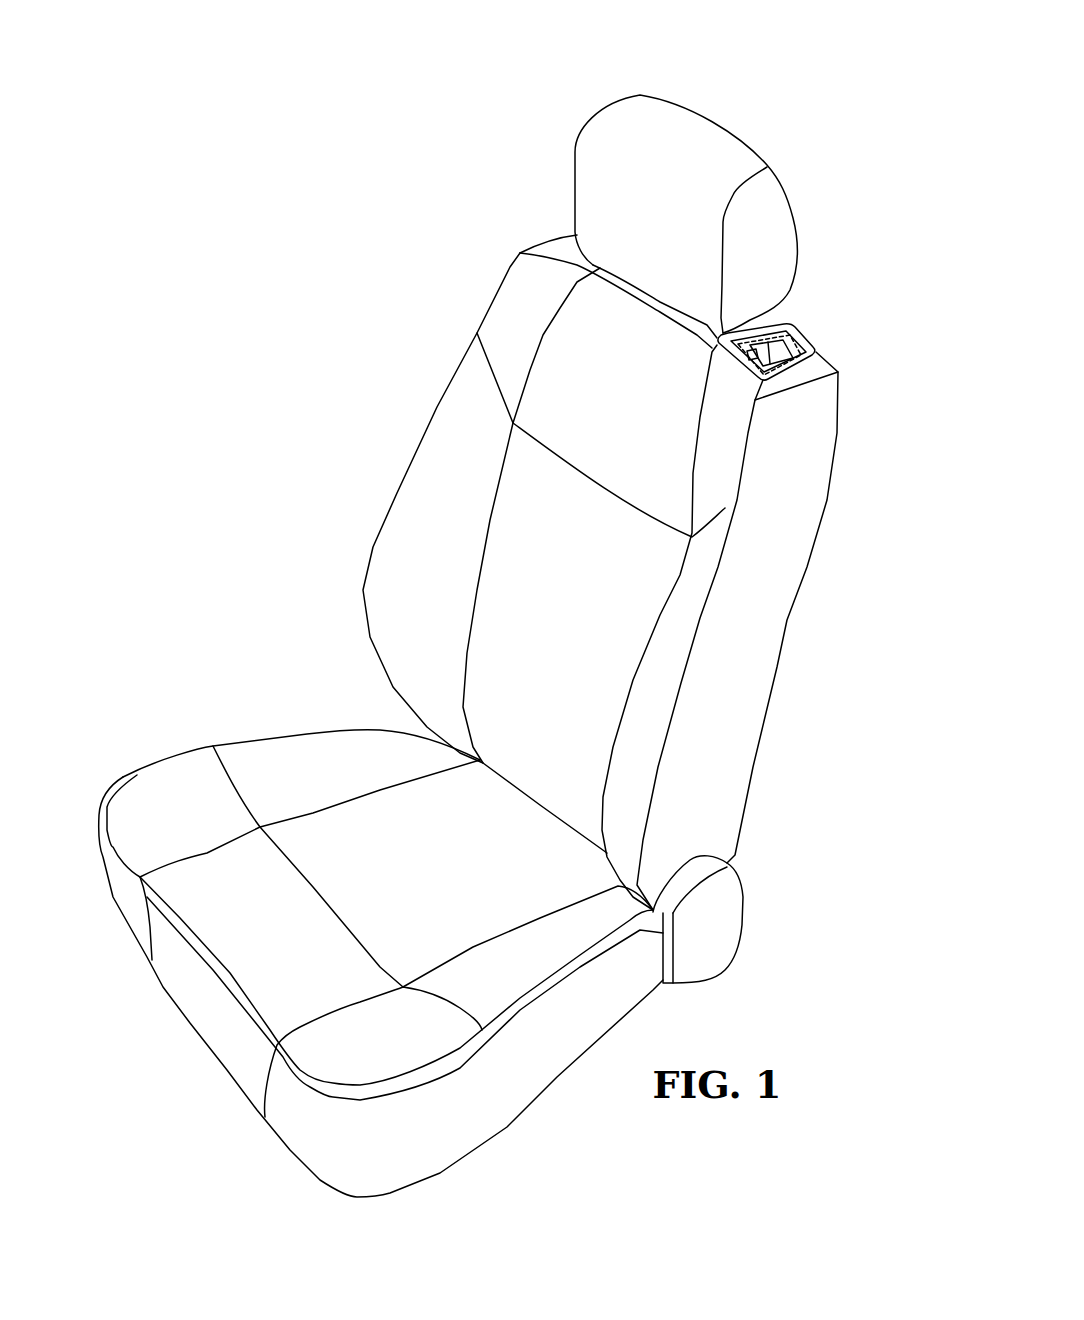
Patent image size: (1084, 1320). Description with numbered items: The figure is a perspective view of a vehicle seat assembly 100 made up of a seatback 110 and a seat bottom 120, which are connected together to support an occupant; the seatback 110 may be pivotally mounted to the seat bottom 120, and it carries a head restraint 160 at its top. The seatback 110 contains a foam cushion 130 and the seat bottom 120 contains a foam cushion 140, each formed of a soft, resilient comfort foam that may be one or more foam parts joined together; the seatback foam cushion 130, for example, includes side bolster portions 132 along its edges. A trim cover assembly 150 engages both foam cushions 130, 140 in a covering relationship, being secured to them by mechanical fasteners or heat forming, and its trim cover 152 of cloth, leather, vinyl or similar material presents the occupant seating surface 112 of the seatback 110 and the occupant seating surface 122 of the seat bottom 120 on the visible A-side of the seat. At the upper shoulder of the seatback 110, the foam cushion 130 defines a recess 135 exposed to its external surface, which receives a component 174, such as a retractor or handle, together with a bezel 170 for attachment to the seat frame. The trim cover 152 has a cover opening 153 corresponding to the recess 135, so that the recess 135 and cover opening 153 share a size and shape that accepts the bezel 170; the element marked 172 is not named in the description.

The vehicle seat assembly 100 is at (437, 123).
The seatback 110 is at (457, 373).
The occupant seating surface 112 is at (513, 423).
The seat bottom 120 is at (123, 780).
The occupant seating surface 122 is at (310, 820).
The foam cushion 130 is at (555, 563).
The side bolster portions 132 is at (420, 573).
The recess 135 is at (780, 350).
The foam cushion 140 is at (193, 987).
The trim cover assembly 150 is at (400, 1033).
The trim cover 152 is at (725, 330).
The cover opening 153 is at (797, 338).
The head restraint 160 is at (650, 183).
The bezel 170 is at (829, 296).
The bezel 172 is at (817, 352).
The component 174 is at (768, 343).